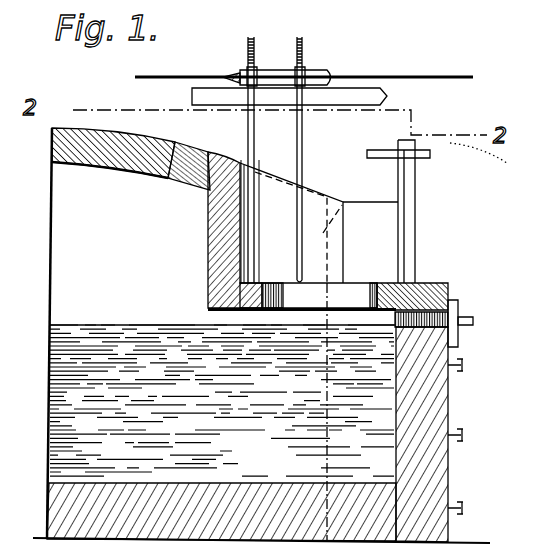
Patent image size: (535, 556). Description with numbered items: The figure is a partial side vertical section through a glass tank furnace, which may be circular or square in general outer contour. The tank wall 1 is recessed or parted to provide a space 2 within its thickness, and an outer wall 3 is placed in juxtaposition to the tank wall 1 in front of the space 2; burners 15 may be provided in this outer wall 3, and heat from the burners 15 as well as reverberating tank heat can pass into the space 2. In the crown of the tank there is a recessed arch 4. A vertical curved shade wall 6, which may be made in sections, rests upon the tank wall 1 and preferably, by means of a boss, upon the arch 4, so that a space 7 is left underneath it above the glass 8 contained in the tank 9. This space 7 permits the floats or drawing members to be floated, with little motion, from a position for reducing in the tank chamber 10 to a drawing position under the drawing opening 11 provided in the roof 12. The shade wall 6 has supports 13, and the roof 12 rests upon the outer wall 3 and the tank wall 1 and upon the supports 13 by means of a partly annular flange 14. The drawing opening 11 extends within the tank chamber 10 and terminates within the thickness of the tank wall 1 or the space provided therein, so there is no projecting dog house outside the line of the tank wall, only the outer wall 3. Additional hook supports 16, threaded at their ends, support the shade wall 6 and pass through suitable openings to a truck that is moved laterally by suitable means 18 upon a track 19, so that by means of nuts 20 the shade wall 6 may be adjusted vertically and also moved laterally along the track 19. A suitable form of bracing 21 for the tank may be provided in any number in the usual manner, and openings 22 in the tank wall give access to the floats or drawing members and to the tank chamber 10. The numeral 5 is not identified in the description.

The tank wall 1 is at (392, 240).
The space 2 is at (368, 318).
The wall 3 is at (449, 350).
The recessed arch 4 is at (198, 150).
The arched refractory cover 5 is at (130, 140).
The vertical curved shade wall 6 is at (208, 213).
The space 7 is at (243, 322).
The glass 8 is at (103, 324).
The tank 9 is at (50, 398).
The tank chamber 10 is at (62, 241).
The drawing opening 11 is at (288, 283).
The roof 12 is at (440, 282).
The supports 13 is at (245, 300).
The partly annular flange 14 is at (318, 72).
The burners 15 is at (467, 313).
The hook supports 16 is at (297, 138).
The means 18 is at (138, 77).
The track 19 is at (388, 97).
The nuts 20 is at (296, 66).
The bracing 21 is at (410, 193).
The openings 22 is at (476, 320).